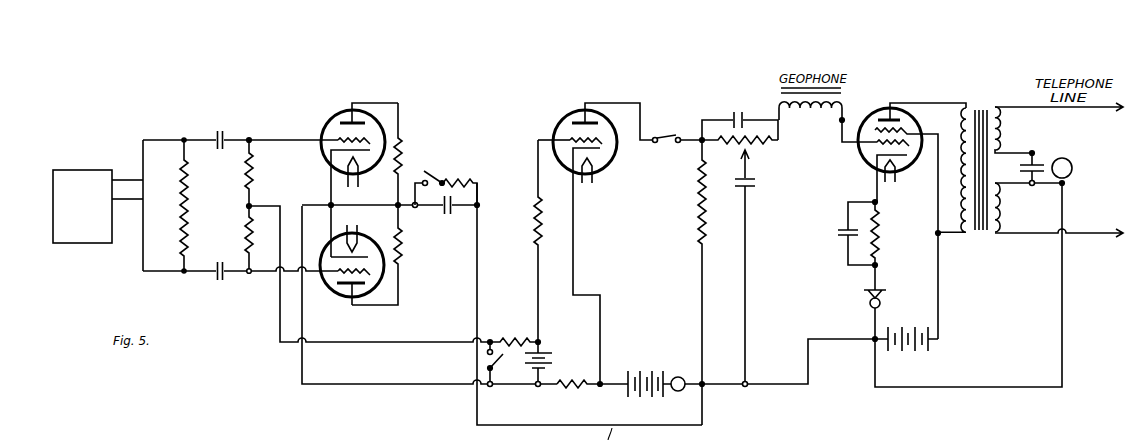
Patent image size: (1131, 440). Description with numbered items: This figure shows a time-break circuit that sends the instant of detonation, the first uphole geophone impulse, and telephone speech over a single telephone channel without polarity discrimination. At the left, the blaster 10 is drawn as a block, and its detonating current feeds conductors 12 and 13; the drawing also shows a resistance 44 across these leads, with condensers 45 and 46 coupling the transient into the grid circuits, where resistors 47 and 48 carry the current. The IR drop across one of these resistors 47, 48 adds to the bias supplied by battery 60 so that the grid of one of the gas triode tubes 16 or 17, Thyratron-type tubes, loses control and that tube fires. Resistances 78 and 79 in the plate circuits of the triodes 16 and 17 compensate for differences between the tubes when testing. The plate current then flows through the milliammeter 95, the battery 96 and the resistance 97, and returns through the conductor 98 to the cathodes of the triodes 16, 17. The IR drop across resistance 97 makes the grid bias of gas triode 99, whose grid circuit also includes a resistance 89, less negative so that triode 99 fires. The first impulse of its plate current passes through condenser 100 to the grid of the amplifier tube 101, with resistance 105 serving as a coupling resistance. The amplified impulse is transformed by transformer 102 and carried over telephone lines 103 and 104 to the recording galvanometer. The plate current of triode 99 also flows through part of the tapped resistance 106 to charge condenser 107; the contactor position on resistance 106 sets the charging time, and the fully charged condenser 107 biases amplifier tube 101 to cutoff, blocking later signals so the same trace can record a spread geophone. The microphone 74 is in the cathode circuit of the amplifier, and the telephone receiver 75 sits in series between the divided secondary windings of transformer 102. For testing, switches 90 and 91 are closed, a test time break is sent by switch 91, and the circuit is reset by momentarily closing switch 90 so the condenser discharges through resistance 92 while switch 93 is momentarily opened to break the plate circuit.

The blaster 10 is at (80, 172).
The conductor 12 is at (125, 180).
The conductor 13 is at (128, 202).
The resistor 44 is at (188, 217).
The condenser 45 is at (225, 277).
The condenser 46 is at (225, 137).
The resistor 47 is at (248, 240).
The resistor 48 is at (253, 177).
The gas triode tube 16 is at (335, 108).
The gas triode tube 17 is at (375, 232).
The resistance 78 is at (405, 158).
The resistance 79 is at (403, 255).
The switch 90 is at (438, 178).
The resistance 92 is at (472, 181).
The conductor 98 is at (365, 385).
The gas triode 99 is at (567, 110).
The switch 93 is at (657, 138).
The resistor 89 is at (537, 213).
The battery 60 is at (548, 358).
The switch 91 is at (498, 356).
The resistance 97 is at (568, 392).
The battery 96 is at (648, 371).
The milliammeter 95 is at (678, 392).
The coupling resistance 105 is at (700, 207).
The condenser 100 is at (743, 100).
The resistance 106 is at (732, 150).
The condenser 107 is at (757, 185).
The amplifier tube 101 is at (913, 170).
The microphone 74 is at (885, 295).
The transformer 102 is at (993, 88).
The telephone line 103 is at (1043, 105).
The telephone line 104 is at (1032, 235).
The telephone receiver 75 is at (1073, 167).